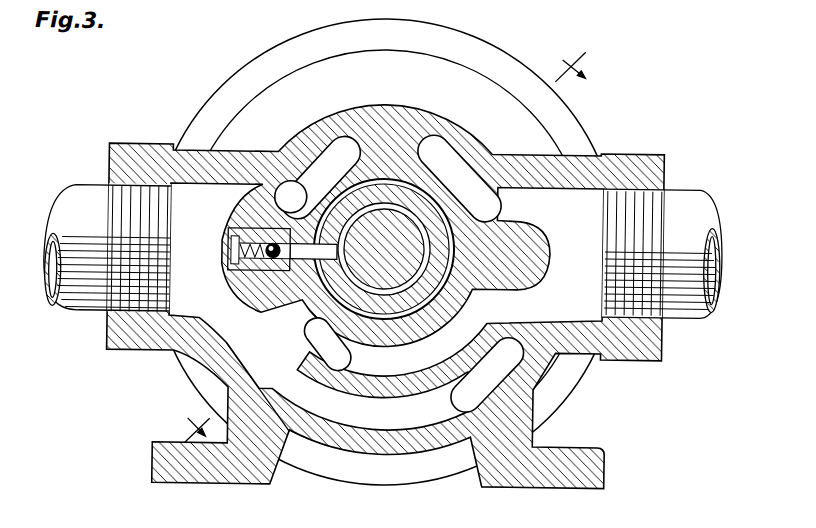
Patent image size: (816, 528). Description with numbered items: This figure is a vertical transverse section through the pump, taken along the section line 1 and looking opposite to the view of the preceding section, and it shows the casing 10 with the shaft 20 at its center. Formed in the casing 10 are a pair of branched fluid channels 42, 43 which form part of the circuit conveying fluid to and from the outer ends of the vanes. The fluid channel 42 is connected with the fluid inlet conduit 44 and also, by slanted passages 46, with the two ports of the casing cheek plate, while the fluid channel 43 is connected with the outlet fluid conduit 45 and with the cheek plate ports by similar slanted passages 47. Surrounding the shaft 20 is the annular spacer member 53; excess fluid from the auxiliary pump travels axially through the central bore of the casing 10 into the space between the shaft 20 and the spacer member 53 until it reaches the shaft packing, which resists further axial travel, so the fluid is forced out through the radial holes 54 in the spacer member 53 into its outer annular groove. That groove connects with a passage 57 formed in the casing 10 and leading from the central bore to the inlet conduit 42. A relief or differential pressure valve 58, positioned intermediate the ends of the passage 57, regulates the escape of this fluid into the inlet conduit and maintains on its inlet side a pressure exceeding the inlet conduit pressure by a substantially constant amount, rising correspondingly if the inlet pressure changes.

The section line 1 is at (379, 243).
The casing 10 is at (505, 56).
The shaft 20 is at (383, 248).
The fluid channel 42 is at (439, 485).
The fluid channel 43 is at (370, 406).
The fluid inlet conduit 44 is at (89, 190).
The outlet fluid conduit 45 is at (691, 200).
The slanted passages 46 is at (310, 167).
The slanted passages 47 is at (455, 180).
The annular spacer member 53 is at (440, 257).
The radial holes 54 is at (275, 215).
The passage 57 is at (300, 264).
The relief or differential pressure valve 58 is at (251, 230).